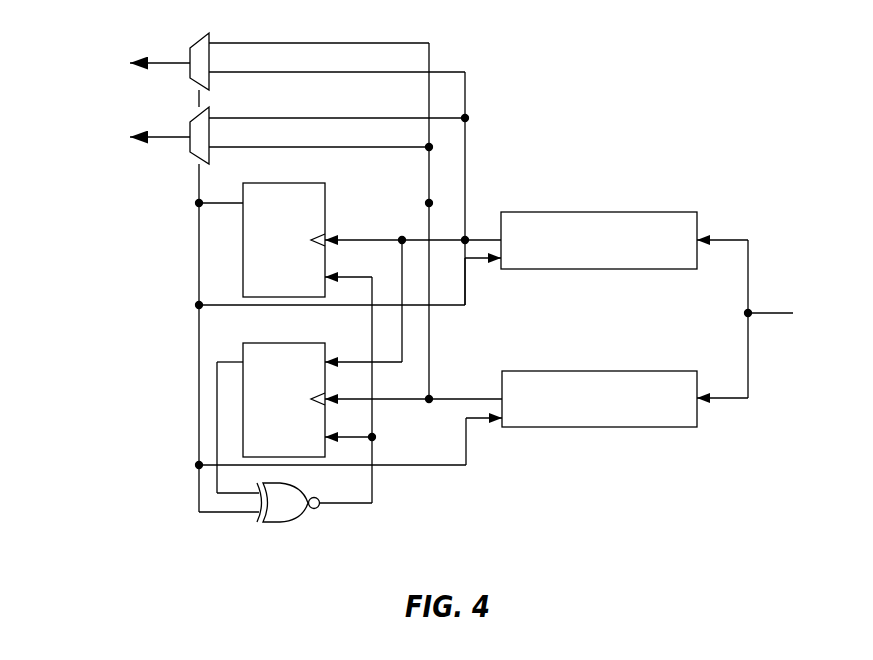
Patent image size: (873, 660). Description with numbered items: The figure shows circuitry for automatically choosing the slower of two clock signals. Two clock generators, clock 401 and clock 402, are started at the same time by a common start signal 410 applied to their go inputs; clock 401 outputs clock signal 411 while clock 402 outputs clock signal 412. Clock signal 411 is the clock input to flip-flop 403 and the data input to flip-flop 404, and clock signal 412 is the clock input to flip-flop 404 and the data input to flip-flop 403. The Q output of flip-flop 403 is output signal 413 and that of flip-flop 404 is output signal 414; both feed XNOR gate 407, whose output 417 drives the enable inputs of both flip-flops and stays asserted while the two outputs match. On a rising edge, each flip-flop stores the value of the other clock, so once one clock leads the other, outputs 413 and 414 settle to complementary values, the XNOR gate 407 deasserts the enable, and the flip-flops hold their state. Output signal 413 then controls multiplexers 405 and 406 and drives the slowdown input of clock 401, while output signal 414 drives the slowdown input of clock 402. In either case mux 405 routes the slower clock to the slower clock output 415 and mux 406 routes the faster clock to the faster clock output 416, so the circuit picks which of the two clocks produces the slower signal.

The clock 401 is at (592, 212).
The clock 402 is at (593, 371).
The flip-flop 403 is at (299, 183).
The flip-flop 404 is at (300, 343).
The multiplexer 405 is at (193, 44).
The multiplexer 406 is at (193, 119).
The XNOR gate 407 is at (288, 522).
The Start signal 410 is at (768, 312).
The clock signal 411 is at (314, 72).
The clock signal 412 is at (314, 43).
The output signal 413 is at (223, 200).
The output signal 414 is at (223, 360).
The Slower Clock output 415 is at (147, 75).
The Faster Clock output 416 is at (147, 148).
The XNOR gate output 417 is at (342, 505).